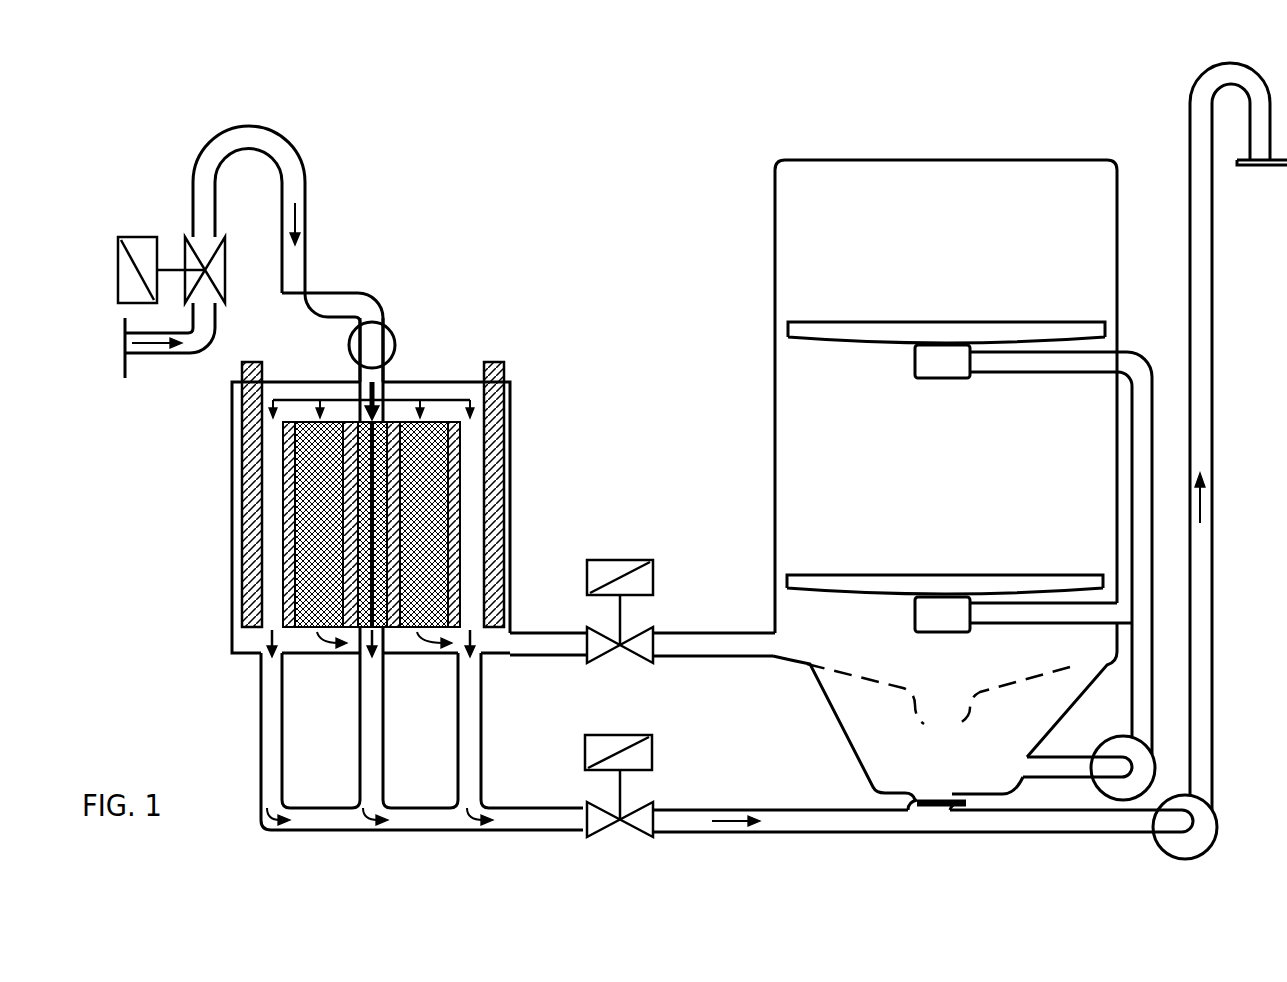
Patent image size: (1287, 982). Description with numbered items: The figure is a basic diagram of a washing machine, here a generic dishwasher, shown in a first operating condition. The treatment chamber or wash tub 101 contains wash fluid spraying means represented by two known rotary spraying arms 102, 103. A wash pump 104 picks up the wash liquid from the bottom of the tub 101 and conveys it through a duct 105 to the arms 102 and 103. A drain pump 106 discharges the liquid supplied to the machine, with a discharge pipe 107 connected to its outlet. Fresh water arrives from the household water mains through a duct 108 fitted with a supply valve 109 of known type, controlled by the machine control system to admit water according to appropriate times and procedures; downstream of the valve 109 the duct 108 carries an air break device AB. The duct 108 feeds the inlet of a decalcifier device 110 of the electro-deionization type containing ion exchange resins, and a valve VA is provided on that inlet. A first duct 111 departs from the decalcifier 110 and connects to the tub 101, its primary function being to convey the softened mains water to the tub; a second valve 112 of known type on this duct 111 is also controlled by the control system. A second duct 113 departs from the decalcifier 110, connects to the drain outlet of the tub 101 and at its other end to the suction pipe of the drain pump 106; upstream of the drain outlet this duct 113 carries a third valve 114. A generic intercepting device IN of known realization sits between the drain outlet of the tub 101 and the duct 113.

The air break device AB is at (267, 124).
The supply valve 109 is at (140, 237).
The duct 108 is at (333, 293).
The valve VA is at (400, 336).
The decalcifier device 110 is at (560, 400).
The first duct 111 is at (705, 633).
The second valve 112 is at (632, 560).
The second duct 113 is at (532, 808).
The third valve 114 is at (640, 755).
The intercepting device IN is at (912, 805).
The treatment chamber or wash tub 101 is at (982, 178).
The rotary spraying arm 102 is at (902, 333).
The rotary spraying arm 103 is at (877, 587).
The wash pump 104 is at (1148, 758).
The duct 105 is at (1137, 457).
The drain pump 106 is at (1217, 820).
The discharge pipe 107 is at (1200, 103).